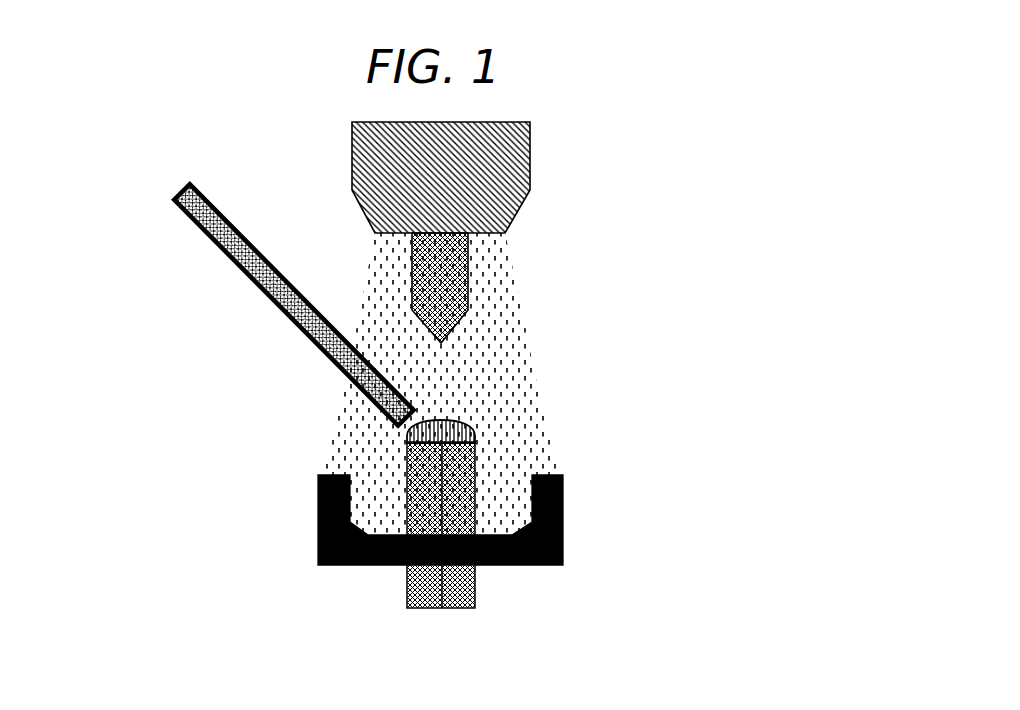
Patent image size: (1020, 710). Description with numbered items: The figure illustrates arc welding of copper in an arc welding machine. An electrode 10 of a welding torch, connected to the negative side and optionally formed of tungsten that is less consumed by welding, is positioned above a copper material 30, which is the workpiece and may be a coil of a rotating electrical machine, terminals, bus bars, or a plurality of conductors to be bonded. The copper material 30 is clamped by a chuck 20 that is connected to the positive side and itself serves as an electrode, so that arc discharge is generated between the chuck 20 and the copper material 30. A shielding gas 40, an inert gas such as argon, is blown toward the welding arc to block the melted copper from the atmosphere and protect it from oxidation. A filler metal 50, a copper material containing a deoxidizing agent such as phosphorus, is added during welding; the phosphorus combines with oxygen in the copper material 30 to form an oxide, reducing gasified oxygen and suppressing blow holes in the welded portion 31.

The electrode 10 is at (470, 270).
The chuck 20 is at (540, 563).
The copper material 30 is at (410, 458).
The welded portion 31 is at (465, 428).
The shielding gas 40 is at (518, 352).
The filler metal 50 is at (210, 235).